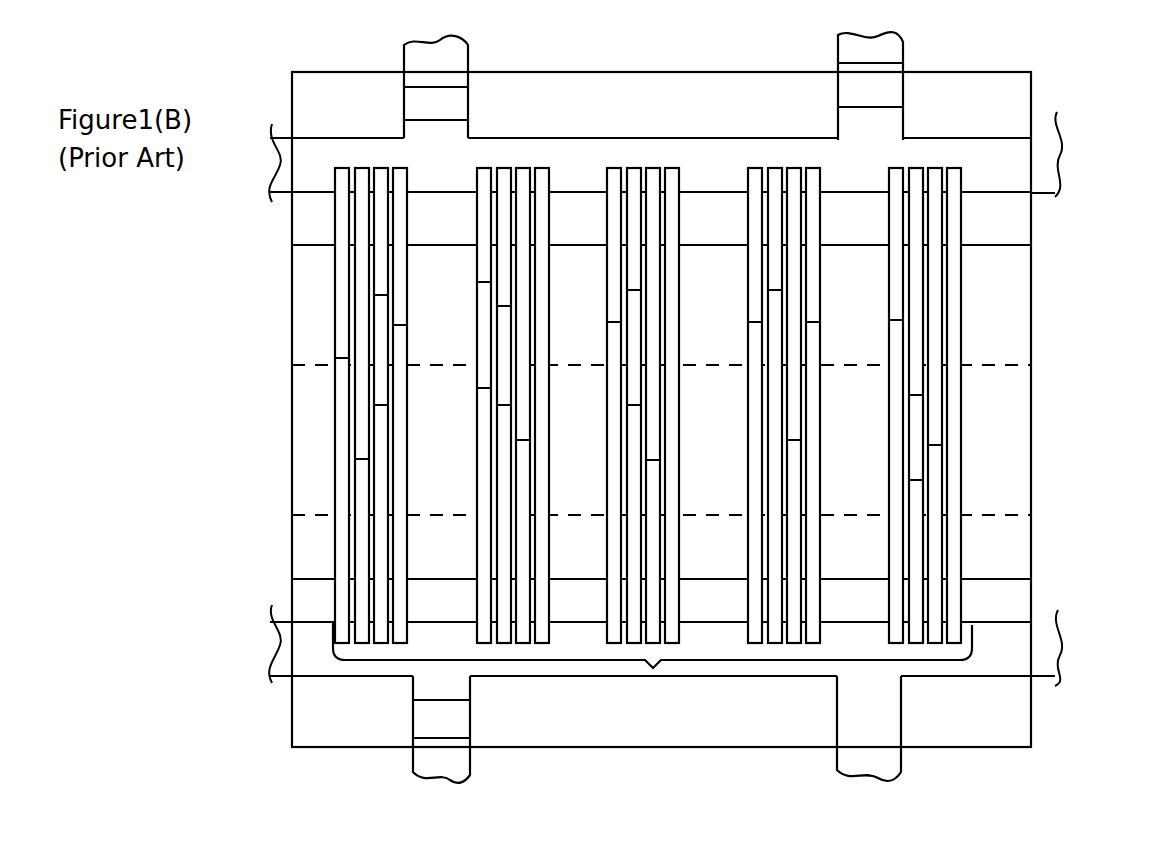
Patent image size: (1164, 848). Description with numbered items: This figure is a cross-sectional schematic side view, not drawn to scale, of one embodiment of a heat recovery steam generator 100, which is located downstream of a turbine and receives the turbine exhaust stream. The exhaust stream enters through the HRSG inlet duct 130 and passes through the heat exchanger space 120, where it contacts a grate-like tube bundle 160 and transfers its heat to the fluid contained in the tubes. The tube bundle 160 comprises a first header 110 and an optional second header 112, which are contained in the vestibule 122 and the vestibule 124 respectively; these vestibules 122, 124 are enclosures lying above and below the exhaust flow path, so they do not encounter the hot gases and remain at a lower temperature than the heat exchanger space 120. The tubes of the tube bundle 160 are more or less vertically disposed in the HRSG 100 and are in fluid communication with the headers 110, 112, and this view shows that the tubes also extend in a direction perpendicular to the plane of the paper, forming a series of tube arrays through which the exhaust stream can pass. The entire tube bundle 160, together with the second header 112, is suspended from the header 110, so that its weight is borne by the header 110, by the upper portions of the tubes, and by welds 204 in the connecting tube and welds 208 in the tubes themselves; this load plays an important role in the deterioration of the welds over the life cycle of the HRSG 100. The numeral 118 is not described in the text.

The heat recovery steam generator 100 is at (1058, 488).
The first header 110 is at (1040, 147).
The second header 112 is at (1053, 617).
The substrate 118 is at (917, 752).
The heat exchanger space 120 is at (1022, 322).
The vestibule 122 is at (1018, 218).
The vestibule 124 is at (1022, 592).
The HRSG inlet duct 130 is at (1003, 367).
The tube bundle 160 is at (653, 666).
The weld 204 is at (462, 95).
The weld 208 is at (362, 349).